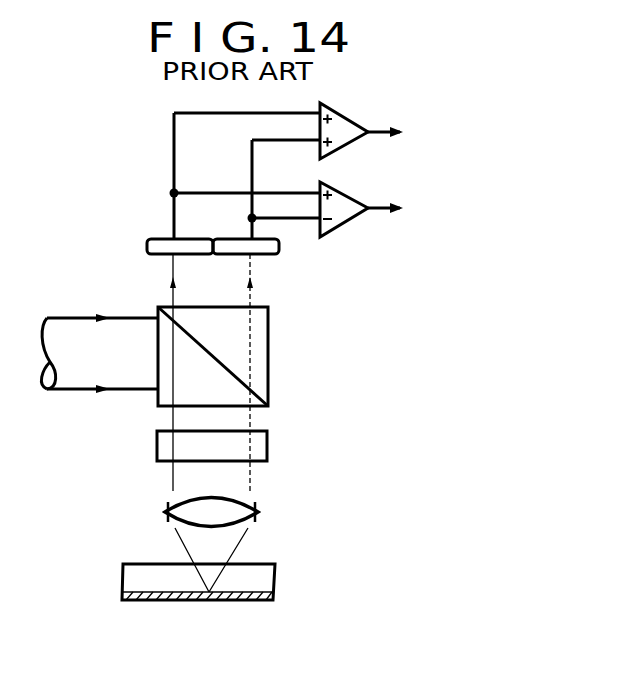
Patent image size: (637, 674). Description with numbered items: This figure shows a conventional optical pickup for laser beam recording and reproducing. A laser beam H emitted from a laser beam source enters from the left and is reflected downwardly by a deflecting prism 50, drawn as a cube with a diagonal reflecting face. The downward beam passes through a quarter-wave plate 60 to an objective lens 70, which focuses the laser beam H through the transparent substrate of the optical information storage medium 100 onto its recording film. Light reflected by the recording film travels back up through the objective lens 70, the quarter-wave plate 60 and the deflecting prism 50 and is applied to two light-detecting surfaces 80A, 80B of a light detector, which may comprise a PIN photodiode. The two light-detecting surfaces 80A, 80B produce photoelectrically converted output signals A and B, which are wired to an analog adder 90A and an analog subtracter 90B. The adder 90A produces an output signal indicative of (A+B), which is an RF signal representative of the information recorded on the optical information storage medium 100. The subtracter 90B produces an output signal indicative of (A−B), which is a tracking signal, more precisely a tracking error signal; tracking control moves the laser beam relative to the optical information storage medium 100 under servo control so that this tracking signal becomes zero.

The analog adder 90A is at (347, 122).
The analog subtracter 90B is at (342, 223).
The light-detecting surface 80A is at (169, 239).
The light-detecting surface 80B is at (268, 255).
The laser beam H is at (71, 325).
The deflecting prism 50 is at (265, 353).
The quarter-wave plate 60 is at (262, 443).
The objective lens 70 is at (252, 515).
The optical information storage medium 100 is at (287, 583).